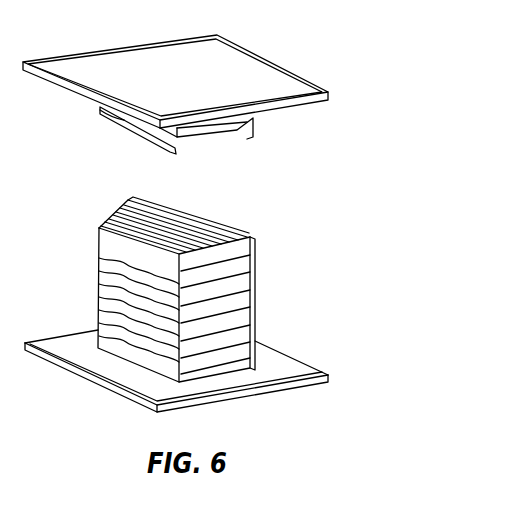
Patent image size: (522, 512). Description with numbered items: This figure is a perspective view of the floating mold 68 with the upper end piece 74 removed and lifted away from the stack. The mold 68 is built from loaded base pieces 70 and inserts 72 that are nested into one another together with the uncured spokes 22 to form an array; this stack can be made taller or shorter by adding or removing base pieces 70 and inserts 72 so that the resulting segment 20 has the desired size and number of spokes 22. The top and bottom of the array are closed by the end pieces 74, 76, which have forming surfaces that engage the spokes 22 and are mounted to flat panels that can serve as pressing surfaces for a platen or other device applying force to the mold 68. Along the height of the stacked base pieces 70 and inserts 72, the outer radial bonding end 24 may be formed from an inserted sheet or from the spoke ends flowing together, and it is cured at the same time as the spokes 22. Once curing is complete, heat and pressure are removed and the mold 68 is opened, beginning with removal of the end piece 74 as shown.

The floating mold 68 is at (355, 148).
The end piece 74 is at (98, 108).
The segment 20 is at (247, 218).
The spoke 22 is at (187, 206).
The outer radial bonding end 24 is at (130, 202).
The base piece 70 is at (99, 272).
The insert 72 is at (255, 284).
The end piece 76 is at (100, 343).